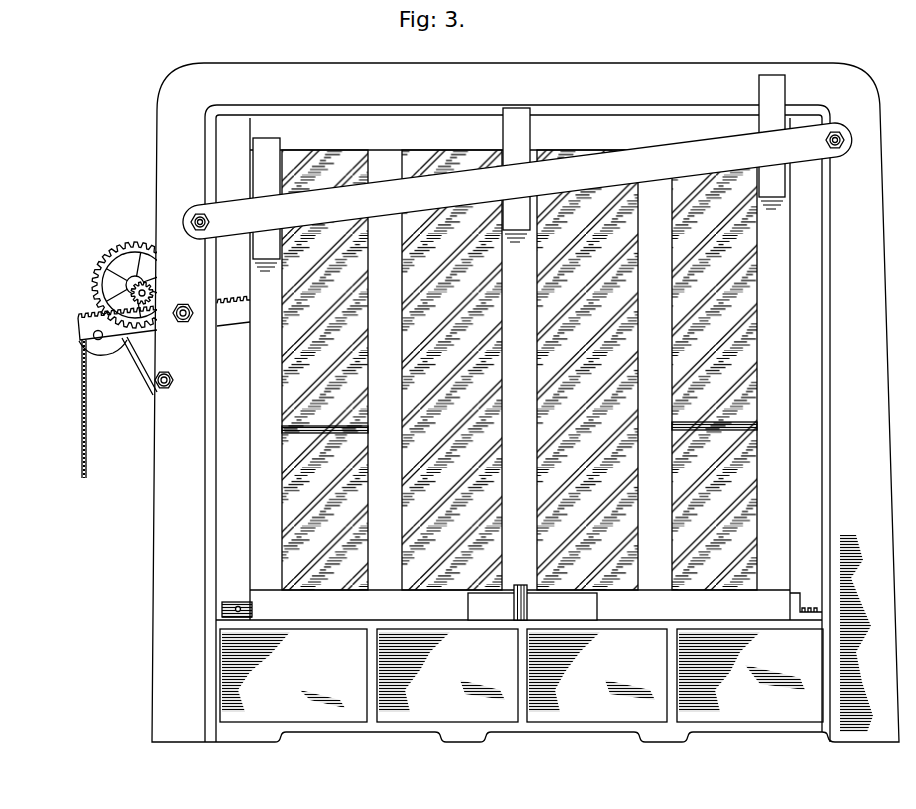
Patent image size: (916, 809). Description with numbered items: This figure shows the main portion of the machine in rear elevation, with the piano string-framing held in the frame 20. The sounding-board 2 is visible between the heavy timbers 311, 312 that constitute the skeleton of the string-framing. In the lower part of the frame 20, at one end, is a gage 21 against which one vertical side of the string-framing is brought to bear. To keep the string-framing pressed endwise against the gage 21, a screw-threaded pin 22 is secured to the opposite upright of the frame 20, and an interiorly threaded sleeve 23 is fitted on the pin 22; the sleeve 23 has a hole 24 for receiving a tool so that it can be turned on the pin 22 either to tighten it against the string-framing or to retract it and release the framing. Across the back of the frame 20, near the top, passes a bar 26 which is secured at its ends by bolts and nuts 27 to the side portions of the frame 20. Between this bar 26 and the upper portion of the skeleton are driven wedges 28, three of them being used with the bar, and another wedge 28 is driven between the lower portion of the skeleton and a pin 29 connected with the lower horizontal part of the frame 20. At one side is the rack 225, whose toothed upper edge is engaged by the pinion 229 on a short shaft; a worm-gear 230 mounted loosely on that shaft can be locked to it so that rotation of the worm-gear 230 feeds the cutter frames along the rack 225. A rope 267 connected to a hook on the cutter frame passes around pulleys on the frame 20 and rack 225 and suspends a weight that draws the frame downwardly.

The sounding-board 2 is at (519, 370).
The frame 20 is at (525, 402).
The gage 21 is at (792, 613).
The screw-threaded pin 22 is at (222, 611).
The sleeve 23 is at (246, 602).
The hole 24 is at (252, 611).
The bar 26 is at (517, 181).
The bolts and nuts 27 is at (192, 222).
The wedges 28 is at (268, 162).
The pin 29 is at (521, 585).
The rack 225 is at (164, 345).
The pinion 229 is at (150, 291).
The worm-gear 230 is at (102, 272).
The rope 267 is at (82, 462).
The heavy timber of the skeleton 311 is at (789, 369).
The heavy timber of the skeleton 312 is at (520, 369).